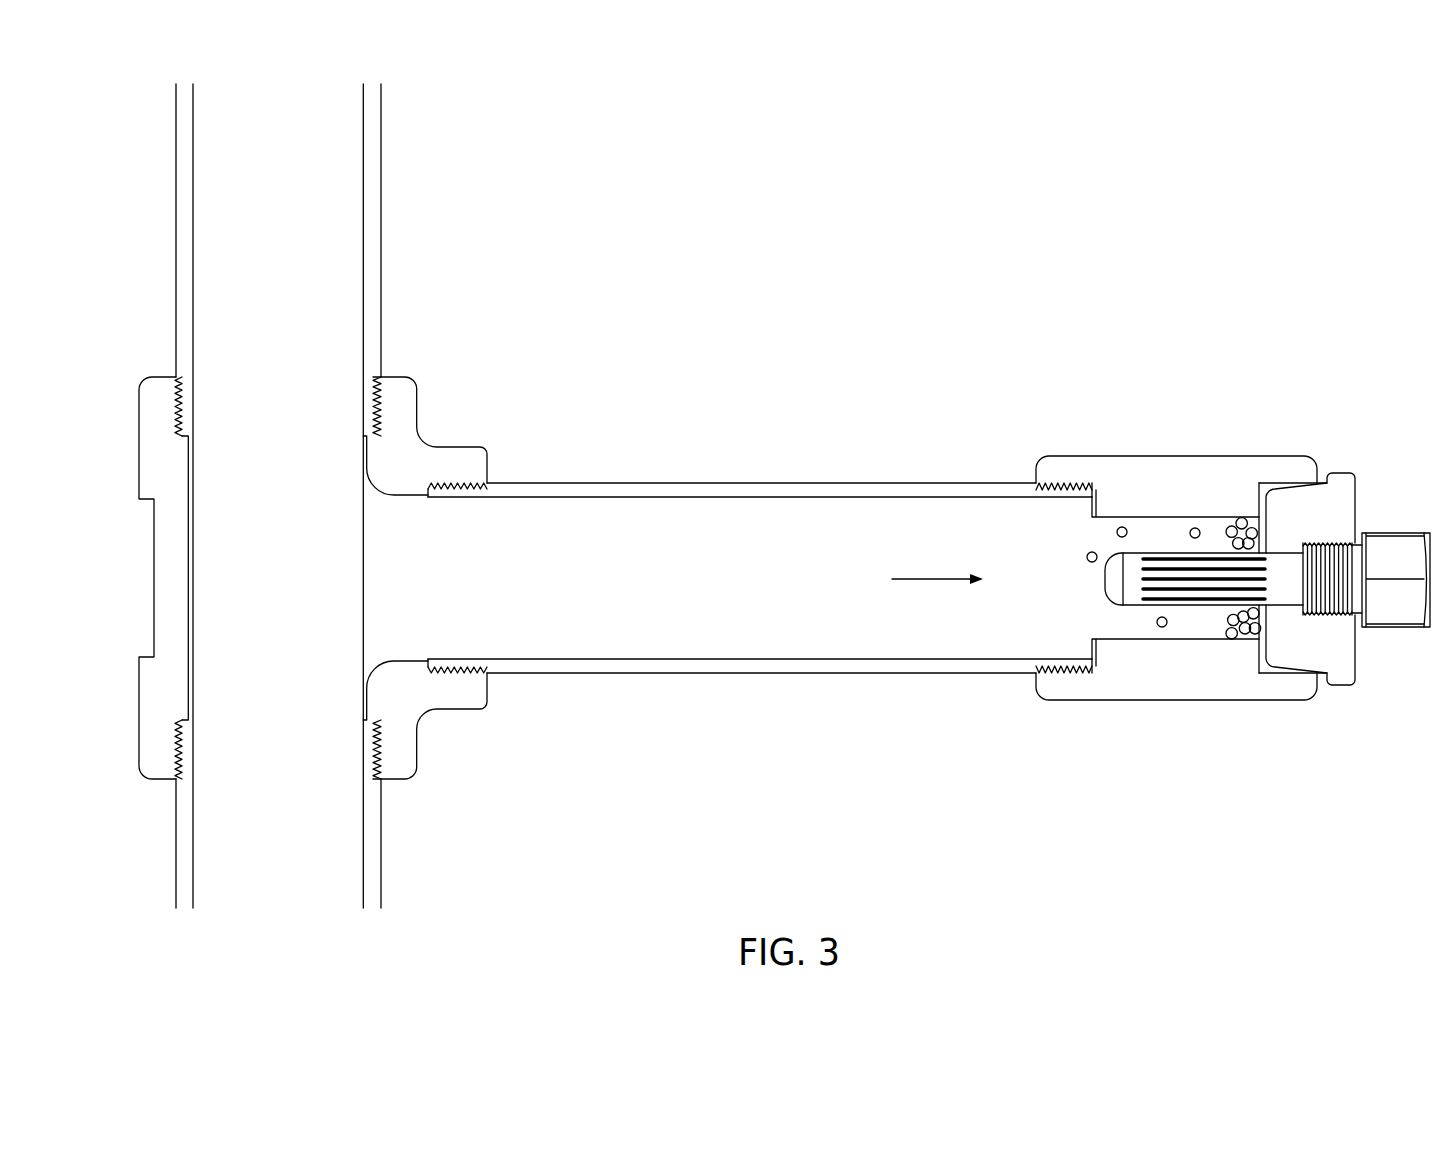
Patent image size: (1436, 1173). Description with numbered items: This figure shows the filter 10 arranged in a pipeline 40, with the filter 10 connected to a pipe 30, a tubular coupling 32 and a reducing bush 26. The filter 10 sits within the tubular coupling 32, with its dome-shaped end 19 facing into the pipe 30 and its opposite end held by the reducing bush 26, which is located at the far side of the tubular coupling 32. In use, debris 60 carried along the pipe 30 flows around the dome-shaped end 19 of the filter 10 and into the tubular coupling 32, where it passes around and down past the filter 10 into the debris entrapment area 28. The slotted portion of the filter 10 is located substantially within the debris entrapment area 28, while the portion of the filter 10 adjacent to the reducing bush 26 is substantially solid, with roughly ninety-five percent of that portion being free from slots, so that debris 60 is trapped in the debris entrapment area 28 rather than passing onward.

The filter 10 is at (1135, 565).
The dome-shaped end 19 is at (1113, 570).
The reducing bush 26 is at (1340, 502).
The debris entrapment area 28 is at (1213, 530).
The pipe 30 is at (875, 673).
The tubular coupling 32 is at (1115, 702).
The pipeline 40 is at (372, 257).
The debris 60 is at (1247, 637).